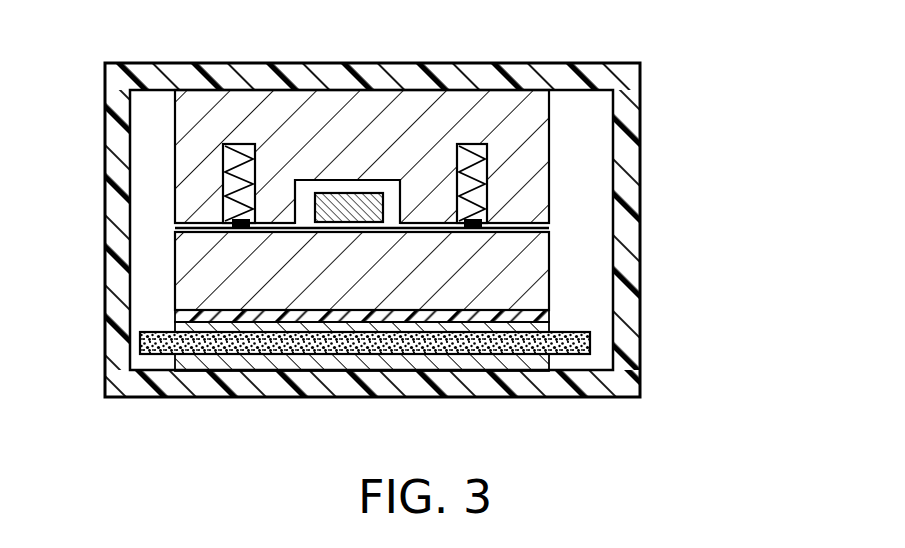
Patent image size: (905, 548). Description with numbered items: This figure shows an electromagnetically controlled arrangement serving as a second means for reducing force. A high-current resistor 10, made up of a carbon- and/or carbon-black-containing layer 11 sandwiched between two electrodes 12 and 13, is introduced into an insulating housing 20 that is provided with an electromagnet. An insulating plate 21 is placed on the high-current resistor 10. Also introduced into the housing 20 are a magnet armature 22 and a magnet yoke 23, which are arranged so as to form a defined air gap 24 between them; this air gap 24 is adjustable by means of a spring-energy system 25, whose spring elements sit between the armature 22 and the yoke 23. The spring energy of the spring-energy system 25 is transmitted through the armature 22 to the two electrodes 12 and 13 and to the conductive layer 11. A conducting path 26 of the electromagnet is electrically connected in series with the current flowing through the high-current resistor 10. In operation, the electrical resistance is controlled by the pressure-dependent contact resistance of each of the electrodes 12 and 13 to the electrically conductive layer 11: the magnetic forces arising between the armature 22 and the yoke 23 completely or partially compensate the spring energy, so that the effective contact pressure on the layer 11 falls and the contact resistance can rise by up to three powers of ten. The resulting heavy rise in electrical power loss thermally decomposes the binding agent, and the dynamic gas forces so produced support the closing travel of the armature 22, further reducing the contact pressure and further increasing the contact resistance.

The high-current resistor 10 is at (475, 318).
The layer 11 is at (590, 343).
The electrode 12 is at (448, 369).
The electrode 13 is at (537, 327).
The insulating housing 20 is at (245, 388).
The insulating plate 21 is at (490, 318).
The magnet armature 22 is at (533, 258).
The magnet yoke 23 is at (288, 98).
The air gap 24 is at (158, 222).
The spring-energy system 25 is at (230, 173).
The conducting path 26 is at (346, 197).